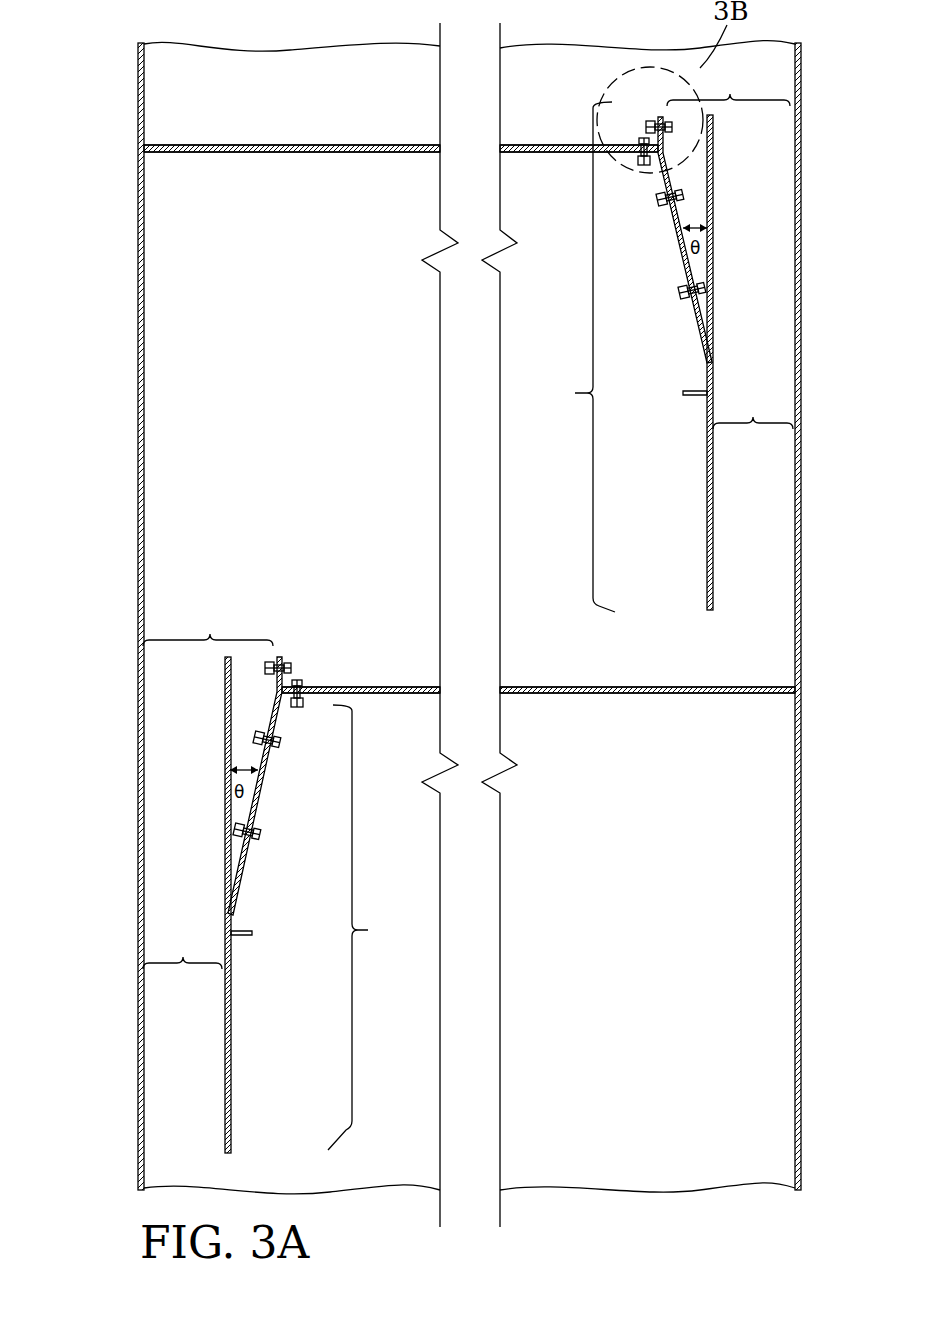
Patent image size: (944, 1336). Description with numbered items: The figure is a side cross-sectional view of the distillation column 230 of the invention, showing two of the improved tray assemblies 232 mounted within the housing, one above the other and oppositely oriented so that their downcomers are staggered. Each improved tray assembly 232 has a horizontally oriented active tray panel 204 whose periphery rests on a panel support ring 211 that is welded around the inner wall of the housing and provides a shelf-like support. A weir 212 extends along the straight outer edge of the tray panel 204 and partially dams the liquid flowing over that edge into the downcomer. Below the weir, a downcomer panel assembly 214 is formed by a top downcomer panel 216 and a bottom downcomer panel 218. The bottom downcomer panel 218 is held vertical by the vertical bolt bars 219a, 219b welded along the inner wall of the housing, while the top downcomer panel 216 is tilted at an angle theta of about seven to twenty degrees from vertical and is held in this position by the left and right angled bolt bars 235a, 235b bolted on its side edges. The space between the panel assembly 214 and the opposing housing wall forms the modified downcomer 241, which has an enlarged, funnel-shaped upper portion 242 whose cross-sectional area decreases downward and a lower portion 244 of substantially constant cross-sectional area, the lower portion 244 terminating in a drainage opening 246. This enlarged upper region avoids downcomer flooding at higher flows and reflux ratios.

The distillation column 230 is at (110, 57).
The improved tray assembly 232 is at (428, 137).
The panel support ring 211 is at (307, 155).
The active tray panel 204 is at (526, 145).
The bottom downcomer panel 218 is at (707, 499).
The top downcomer panel 216 is at (675, 262).
The weir 212 is at (658, 110).
The left angled bolt bar 235a is at (257, 702).
The right angled bolt bar 235b is at (618, 172).
The vertical bolt bar 219a is at (225, 913).
The vertical bolt bar 219b is at (710, 360).
The upper portion of downcomer 242 is at (466, 358).
The lower portion of downcomer 244 is at (468, 679).
The downcomer panel assembly 214 is at (471, 626).
The modified downcomer 241 is at (469, 470).
The drainage opening 246 is at (757, 607).